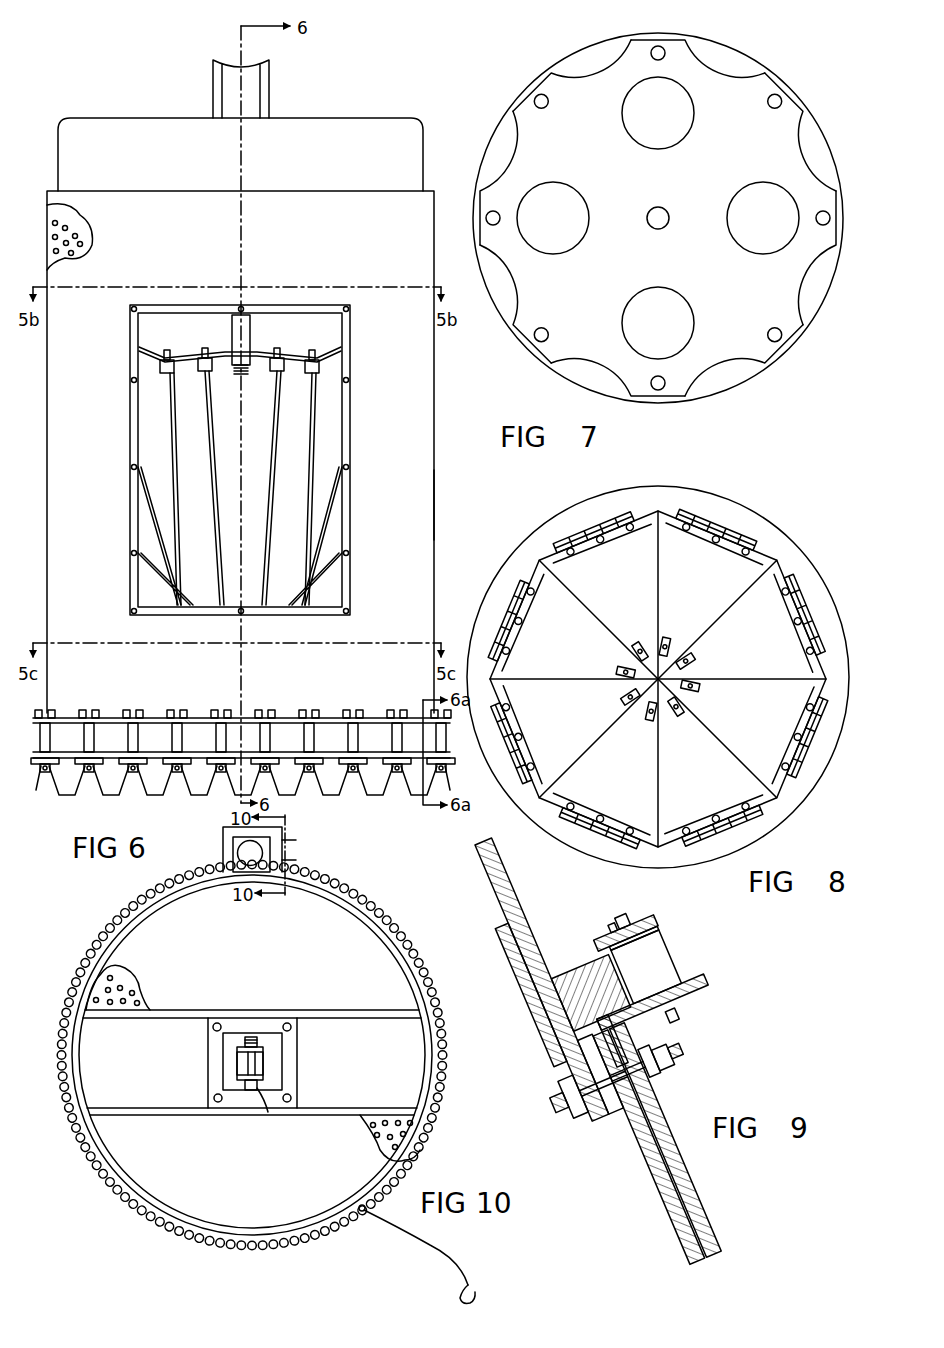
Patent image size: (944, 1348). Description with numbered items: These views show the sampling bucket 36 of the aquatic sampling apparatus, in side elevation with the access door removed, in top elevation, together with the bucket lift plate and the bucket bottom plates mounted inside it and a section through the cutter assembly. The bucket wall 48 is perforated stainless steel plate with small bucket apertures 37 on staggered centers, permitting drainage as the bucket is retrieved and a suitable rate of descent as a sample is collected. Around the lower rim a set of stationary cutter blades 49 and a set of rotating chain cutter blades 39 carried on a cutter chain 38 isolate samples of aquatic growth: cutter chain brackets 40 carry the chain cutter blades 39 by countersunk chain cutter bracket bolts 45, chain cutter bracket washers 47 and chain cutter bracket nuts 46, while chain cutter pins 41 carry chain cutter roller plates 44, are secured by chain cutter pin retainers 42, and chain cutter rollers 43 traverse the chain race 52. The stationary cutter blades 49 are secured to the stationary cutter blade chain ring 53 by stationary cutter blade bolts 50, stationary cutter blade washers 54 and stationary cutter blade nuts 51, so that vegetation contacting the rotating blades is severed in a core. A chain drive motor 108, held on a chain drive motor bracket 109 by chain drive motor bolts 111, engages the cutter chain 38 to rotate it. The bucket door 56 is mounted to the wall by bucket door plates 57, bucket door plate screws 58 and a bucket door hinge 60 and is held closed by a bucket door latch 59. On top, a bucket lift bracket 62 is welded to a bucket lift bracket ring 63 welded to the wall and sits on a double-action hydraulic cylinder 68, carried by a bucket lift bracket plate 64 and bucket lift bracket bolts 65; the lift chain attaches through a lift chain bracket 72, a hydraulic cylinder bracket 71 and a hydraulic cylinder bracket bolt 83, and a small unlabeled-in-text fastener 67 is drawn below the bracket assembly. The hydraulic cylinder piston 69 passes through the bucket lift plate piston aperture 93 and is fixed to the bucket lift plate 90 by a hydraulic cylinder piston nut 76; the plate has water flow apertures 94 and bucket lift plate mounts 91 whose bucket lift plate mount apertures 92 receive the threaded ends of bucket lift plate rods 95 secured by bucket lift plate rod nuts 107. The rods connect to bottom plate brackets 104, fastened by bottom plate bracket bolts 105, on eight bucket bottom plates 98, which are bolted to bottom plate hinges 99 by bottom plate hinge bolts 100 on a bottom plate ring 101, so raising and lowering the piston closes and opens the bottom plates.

In FIG. 6, the sampling bucket 36 is at (441, 430).
In FIG. 6, the bucket apertures 37 is at (72, 228).
In FIG. 10, the bucket apertures 37 is at (118, 978).
In FIG. 9, the cutter chain 38 is at (626, 933).
In FIG. 10, the cutter chain 38 is at (345, 885).
In FIG. 6, the chain cutter blades 39 is at (454, 774).
In FIG. 9, the chain cutter blades 39 is at (666, 1140).
In FIG. 6, the cutter chain brackets 40 is at (78, 774).
In FIG. 9, the cutter chain brackets 40 is at (660, 1020).
In FIG. 6, the chain cutter pins 41 is at (96, 710).
In FIG. 9, the chain cutter pins 41 is at (643, 972).
In FIG. 6, the chain cutter pin retainers 42 is at (215, 710).
In FIG. 9, the chain cutter pin retainers 42 is at (623, 922).
In FIG. 9, the chain cutter rollers 43 is at (646, 967).
In FIG. 9, the chain cutter roller plates 44 is at (633, 938).
In FIG. 9, the chain cutter bracket bolts 45 is at (646, 1063).
In FIG. 6, the chain cutter bracket nuts 46 is at (175, 778).
In FIG. 9, the chain cutter bracket nuts 46 is at (662, 1057).
In FIG. 9, the chain cutter bracket washers 47 is at (649, 1061).
In FIG. 6, the bucket wall 48 is at (434, 502).
In FIG. 9, the bucket wall 48 is at (542, 979).
In FIG. 10, the bucket wall 48 is at (383, 945).
In FIG. 6, the stationary cutter blades 49 is at (238, 780).
In FIG. 9, the stationary cutter blades 49 is at (649, 1147).
In FIG. 9, the stationary cutter blade bolts 50 is at (590, 1090).
In FIG. 9, the stationary cutter blade nuts 51 is at (573, 1096).
In FIG. 9, the chain race 52 is at (590, 993).
In FIG. 9, the stationary cutter blade chain ring 53 is at (530, 995).
In FIG. 9, the stationary cutter blade washers 54 is at (601, 1074).
In FIG. 10, the bucket door 56 is at (415, 1232).
In FIG. 6, the bucket door plates 57 is at (312, 305).
In FIG. 6, the bucket door plate screws 58 is at (168, 305).
In FIG. 10, the bucket door latch 59 is at (472, 1289).
In FIG. 10, the bucket door hinge 60 is at (362, 1205).
In FIG. 6, the bucket lift bracket 62 is at (240, 154).
In FIG. 10, the bucket lift bracket 62 is at (175, 1014).
In FIG. 10, the bucket lift bracket ring 63 is at (200, 885).
In FIG. 10, the bucket lift bracket plate 64 is at (282, 1052).
In FIG. 10, the bucket lift bracket bolts 65 is at (287, 1023).
In FIG. 10, the pin 67 is at (258, 1100).
In FIG. 6, the hydraulic cylinder 68 is at (213, 72).
In FIG. 6, the hydraulic cylinder piston 69 is at (243, 310).
In FIG. 10, the hydraulic cylinder bracket 71 is at (243, 1080).
In FIG. 10, the lift chain bracket 72 is at (252, 1062).
In FIG. 6, the hydraulic cylinder piston nut 76 is at (250, 368).
In FIG. 10, the hydraulic cylinder bracket bolt 83 is at (251, 1036).
In FIG. 6, the bucket lift plate 90 is at (215, 347).
In FIG. 7, the bucket lift plate 90 is at (650, 217).
In FIG. 7, the bucket lift plate mounts 91 is at (670, 40).
In FIG. 7, the bucket lift plate mount apertures 92 is at (652, 46).
In FIG. 7, the bucket lift plate piston aperture 93 is at (665, 220).
In FIG. 7, the water flow apertures 94 is at (658, 218).
In FIG. 6, the bucket lift plate rods 95 is at (180, 433).
In FIG. 8, the bucket bottom plates 98 is at (658, 679).
In FIG. 8, the bottom plate hinges 99 is at (590, 535).
In FIG. 8, the bottom plate hinge bolts 100 is at (630, 522).
In FIG. 8, the bottom plate ring 101 is at (805, 820).
In FIG. 8, the bottom plate brackets 104 is at (652, 650).
In FIG. 8, the bottom plate bracket bolts 105 is at (680, 652).
In FIG. 6, the bucket lift plate rod nuts 107 is at (167, 352).
In FIG. 10, the chain drive motor 108 is at (251, 854).
In FIG. 10, the chain drive motor bracket 109 is at (223, 840).
In FIG. 10, the chain drive motor bolts 111 is at (303, 851).